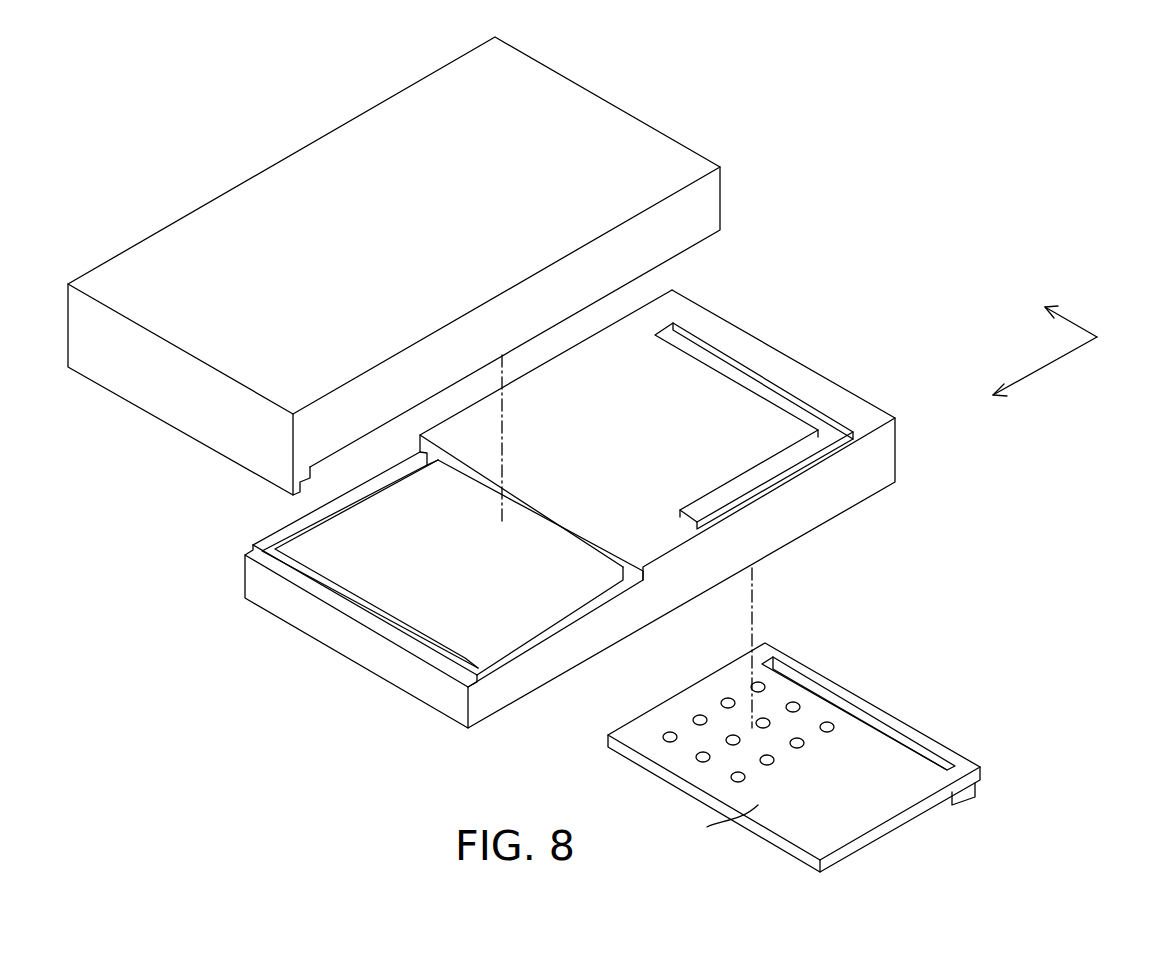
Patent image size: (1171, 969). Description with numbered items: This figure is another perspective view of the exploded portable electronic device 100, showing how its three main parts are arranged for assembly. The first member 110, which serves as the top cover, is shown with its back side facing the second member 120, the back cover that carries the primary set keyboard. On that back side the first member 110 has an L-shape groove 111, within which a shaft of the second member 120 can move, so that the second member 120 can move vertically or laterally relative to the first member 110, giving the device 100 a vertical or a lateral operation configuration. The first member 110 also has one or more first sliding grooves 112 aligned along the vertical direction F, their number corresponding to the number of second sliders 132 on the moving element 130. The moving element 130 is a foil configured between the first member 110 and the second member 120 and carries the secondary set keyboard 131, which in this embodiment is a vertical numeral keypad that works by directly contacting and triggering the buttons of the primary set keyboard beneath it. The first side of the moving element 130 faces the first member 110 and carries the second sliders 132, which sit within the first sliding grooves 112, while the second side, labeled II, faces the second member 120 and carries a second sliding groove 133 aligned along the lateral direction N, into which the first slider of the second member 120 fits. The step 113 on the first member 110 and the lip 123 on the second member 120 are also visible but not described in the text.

The portable electronic device 100 is at (1033, 106).
The first member 110 is at (835, 380).
The L-shape groove 111 is at (746, 380).
The first sliding groove 112 is at (292, 537).
The step rib 113 is at (645, 574).
The second member 120 is at (640, 120).
The hook 123 is at (305, 476).
The moving element 130 is at (928, 735).
The secondary set keyboard 131 is at (797, 702).
The second slider 132 is at (963, 805).
The second sliding groove 133 is at (868, 720).